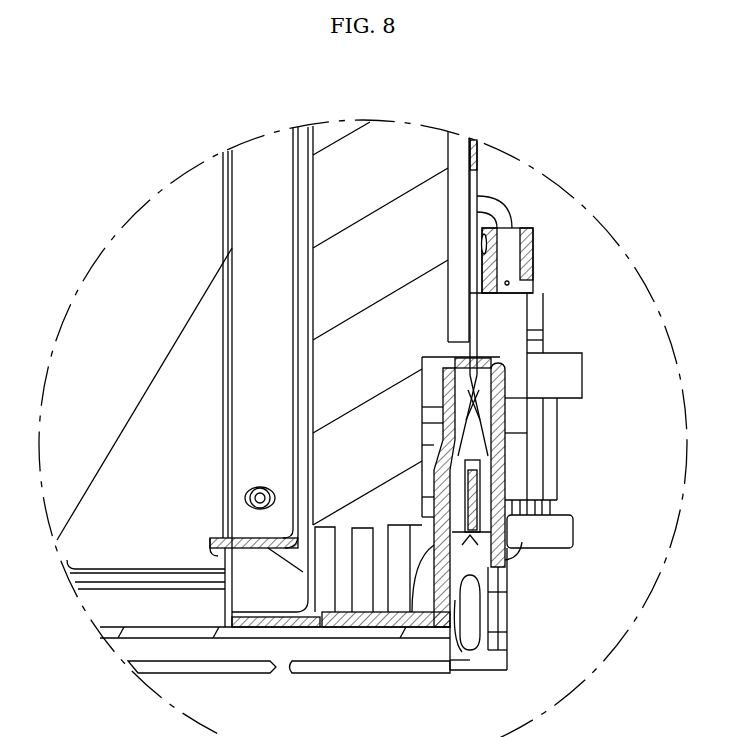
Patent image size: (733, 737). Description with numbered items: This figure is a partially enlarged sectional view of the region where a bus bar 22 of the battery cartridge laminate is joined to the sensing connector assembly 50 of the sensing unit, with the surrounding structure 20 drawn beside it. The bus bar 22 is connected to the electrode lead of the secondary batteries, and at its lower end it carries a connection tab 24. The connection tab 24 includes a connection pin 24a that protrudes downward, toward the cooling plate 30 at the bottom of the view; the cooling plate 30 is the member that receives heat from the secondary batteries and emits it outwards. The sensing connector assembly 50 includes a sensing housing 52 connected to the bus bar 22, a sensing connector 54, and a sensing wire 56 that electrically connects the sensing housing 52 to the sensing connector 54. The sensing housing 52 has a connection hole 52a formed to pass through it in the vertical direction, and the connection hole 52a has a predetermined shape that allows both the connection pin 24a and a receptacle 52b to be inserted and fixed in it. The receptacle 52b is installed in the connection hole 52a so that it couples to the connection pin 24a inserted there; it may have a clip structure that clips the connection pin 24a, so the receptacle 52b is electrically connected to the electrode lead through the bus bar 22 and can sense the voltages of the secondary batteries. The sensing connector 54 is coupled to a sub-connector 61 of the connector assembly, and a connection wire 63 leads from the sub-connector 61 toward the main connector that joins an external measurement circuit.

The door panel 20 is at (390, 140).
The bus bar 22 is at (462, 150).
The connection tab 24 is at (478, 222).
The connection pin 24a is at (480, 318).
The cooling plate 30 is at (325, 634).
The sensing connector assembly 50 is at (530, 615).
The sensing housing 52 is at (497, 467).
The connection hole 52a is at (474, 362).
The receptacle 52b is at (500, 398).
The sensing connector 54 is at (572, 530).
The sensing wire 56 is at (470, 640).
The sub-connector 61 is at (552, 481).
The connection wire 63 is at (508, 228).